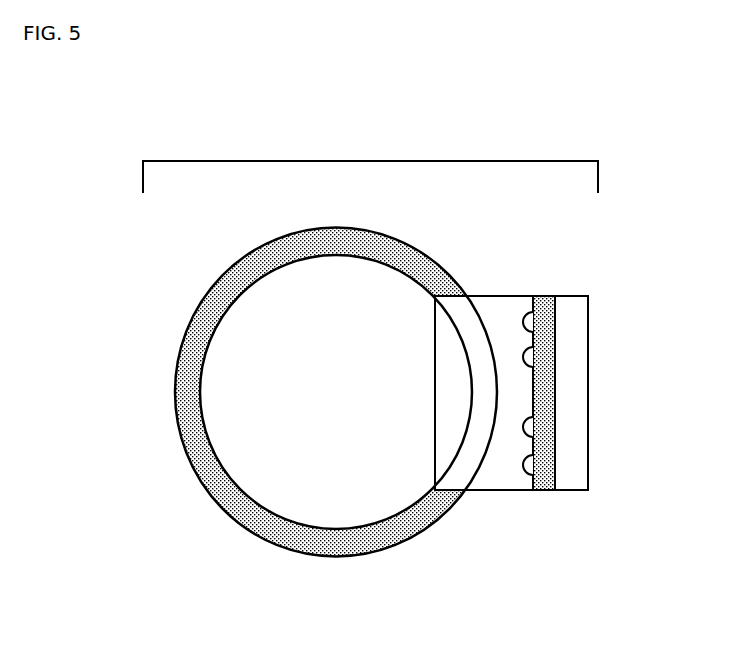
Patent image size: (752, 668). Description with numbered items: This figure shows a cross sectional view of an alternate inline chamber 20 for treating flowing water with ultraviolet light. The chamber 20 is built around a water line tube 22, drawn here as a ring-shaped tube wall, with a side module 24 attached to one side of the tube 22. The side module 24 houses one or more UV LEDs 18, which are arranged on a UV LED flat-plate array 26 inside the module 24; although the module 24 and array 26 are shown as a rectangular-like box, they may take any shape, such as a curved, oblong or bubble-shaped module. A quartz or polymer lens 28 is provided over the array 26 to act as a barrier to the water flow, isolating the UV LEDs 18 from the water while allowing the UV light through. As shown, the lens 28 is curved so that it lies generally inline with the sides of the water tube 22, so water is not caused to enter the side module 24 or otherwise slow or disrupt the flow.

The inline chamber 20 is at (370, 161).
The water line tube 22 is at (329, 388).
The side module 24 is at (590, 326).
The UV LED flat-plate array 26 is at (543, 452).
The lens 28 is at (465, 316).
The UV LEDs 18 is at (522, 468).